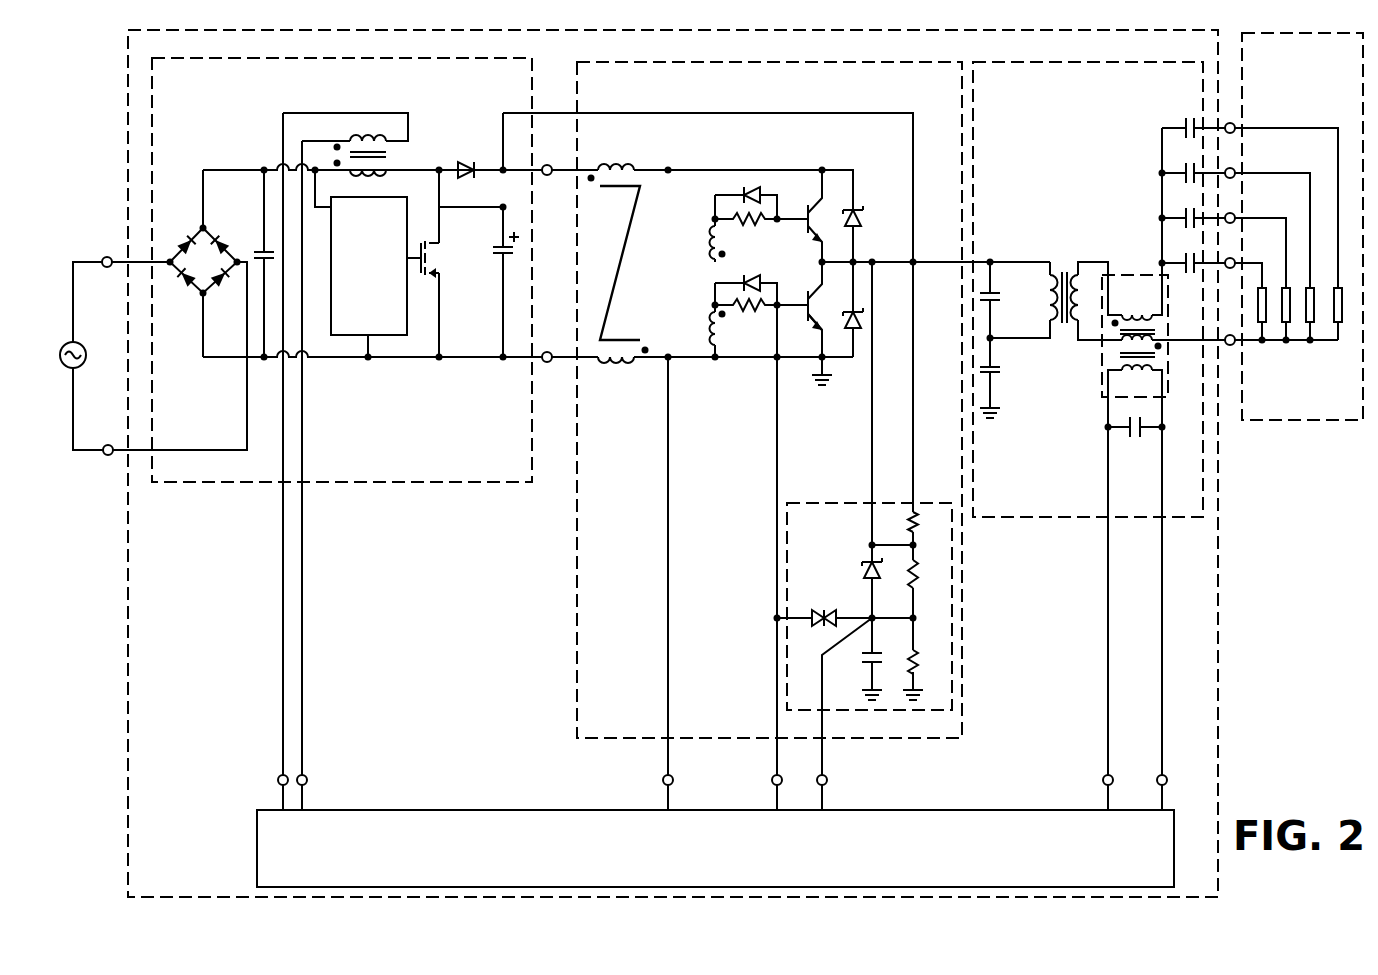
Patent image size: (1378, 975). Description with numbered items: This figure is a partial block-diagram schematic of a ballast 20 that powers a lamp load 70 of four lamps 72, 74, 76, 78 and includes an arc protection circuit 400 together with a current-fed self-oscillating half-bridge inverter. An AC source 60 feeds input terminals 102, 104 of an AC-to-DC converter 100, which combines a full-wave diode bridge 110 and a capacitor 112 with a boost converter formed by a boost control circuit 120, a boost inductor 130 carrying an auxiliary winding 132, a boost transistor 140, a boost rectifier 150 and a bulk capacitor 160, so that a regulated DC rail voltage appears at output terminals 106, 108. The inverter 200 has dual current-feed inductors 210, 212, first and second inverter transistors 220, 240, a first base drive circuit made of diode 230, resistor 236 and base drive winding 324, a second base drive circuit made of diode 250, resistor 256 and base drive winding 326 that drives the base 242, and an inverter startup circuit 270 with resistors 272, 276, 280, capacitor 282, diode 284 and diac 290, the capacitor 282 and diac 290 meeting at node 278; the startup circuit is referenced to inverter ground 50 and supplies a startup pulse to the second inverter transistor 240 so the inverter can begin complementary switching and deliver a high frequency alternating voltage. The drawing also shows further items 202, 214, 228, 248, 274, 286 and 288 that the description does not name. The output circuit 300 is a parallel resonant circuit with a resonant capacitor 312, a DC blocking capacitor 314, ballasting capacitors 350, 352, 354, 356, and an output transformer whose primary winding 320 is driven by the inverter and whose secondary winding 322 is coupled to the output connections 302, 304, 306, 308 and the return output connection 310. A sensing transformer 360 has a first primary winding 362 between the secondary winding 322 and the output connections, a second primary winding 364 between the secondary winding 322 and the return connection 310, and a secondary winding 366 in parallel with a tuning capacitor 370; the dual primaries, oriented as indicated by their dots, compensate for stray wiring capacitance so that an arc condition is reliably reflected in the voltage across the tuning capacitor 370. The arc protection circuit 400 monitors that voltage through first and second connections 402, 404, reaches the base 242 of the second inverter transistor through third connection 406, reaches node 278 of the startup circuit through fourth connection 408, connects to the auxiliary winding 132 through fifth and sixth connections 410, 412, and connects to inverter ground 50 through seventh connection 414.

The ballast 20 is at (224, 599).
The inverter ground 50 is at (832, 377).
The AC source 60 is at (80, 346).
The lamp load 70 is at (1329, 66).
The lamp 72 is at (1264, 288).
The lamp 74 is at (1288, 288).
The lamp 76 is at (1312, 288).
The lamp 78 is at (1340, 288).
The AC-to-DC converter 100 is at (210, 86).
The input terminal 102 is at (107, 256).
The input terminal 104 is at (108, 456).
The output terminal 106 is at (552, 166).
The output terminal 108 is at (547, 362).
The full-wave diode bridge 110 is at (218, 271).
The capacitor 112 is at (262, 250).
The boost control circuit 120 is at (353, 311).
The boost inductor 130 is at (372, 177).
The auxiliary winding 132 is at (356, 138).
The boost transistor 140 is at (440, 268).
The boost rectifier 150 is at (468, 162).
The bulk capacitor 160 is at (498, 243).
The inverter 200 is at (770, 92).
The output node 202 is at (875, 260).
The current-feed inductor 210 is at (612, 166).
The current-feed inductor 212 is at (616, 364).
The transformer core 214 is at (662, 262).
The first inverter transistor 220 is at (815, 215).
The zener diode 228 is at (862, 218).
The diode 230 is at (747, 188).
The resistor 236 is at (752, 224).
The second inverter transistor 240 is at (818, 307).
The base 242 is at (812, 320).
The zener diode 248 is at (860, 326).
The diode 250 is at (757, 282).
The resistor 256 is at (752, 313).
The inverter startup circuit 270 is at (826, 529).
The resistor 272 is at (910, 512).
The node 274 is at (913, 545).
The resistor 276 is at (916, 576).
The node 278 is at (913, 618).
The resistor 280 is at (934, 648).
The capacitor 282 is at (864, 655).
The diode 284 is at (866, 572).
The node 286 is at (870, 598).
The node 288 is at (870, 545).
The diac 290 is at (828, 610).
The output circuit 300 is at (1026, 96).
The first output connection 302 is at (1234, 258).
The second output connection 304 is at (1234, 214).
The third output connection 306 is at (1234, 169).
The fourth output connection 308 is at (1234, 124).
The return output connection 310 is at (1233, 346).
The resonant capacitor 312 is at (998, 285).
The DC blocking capacitor 314 is at (994, 367).
The primary winding 320 is at (1048, 302).
The secondary winding 322 is at (1080, 280).
The first auxiliary winding 324 is at (713, 238).
The second auxiliary winding 326 is at (713, 325).
The ballasting capacitor 350 is at (1184, 262).
The ballasting capacitor 352 is at (1184, 217).
The ballasting capacitor 354 is at (1184, 172).
The ballasting capacitor 356 is at (1184, 127).
The sensing transformer 360 is at (1104, 355).
The first primary winding 362 is at (1138, 311).
The second primary winding 364 is at (1150, 338).
The secondary winding 366 is at (1143, 383).
The tuning capacitor 370 is at (1132, 432).
The arc protection circuit 400 is at (628, 870).
The first connection 402 is at (1103, 781).
The second connection 404 is at (1167, 781).
The third connection 406 is at (772, 780).
The fourth connection 408 is at (827, 782).
The fifth connection 410 is at (277, 778).
The sixth connection 412 is at (307, 783).
The seventh connection 414 is at (663, 780).